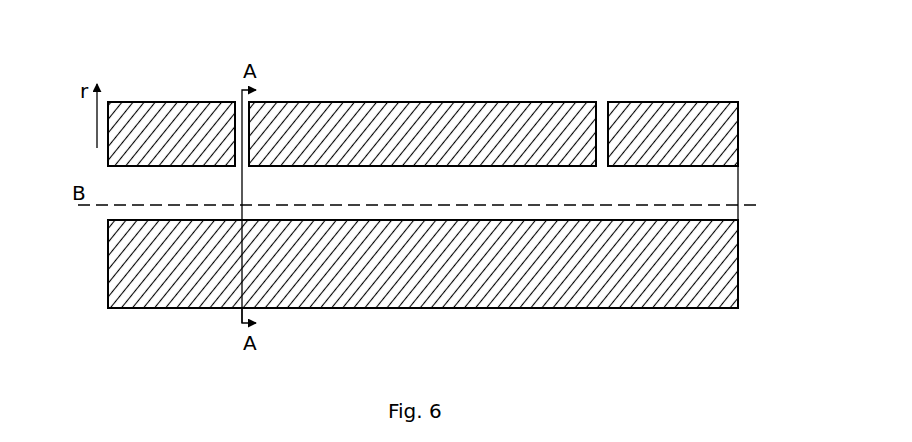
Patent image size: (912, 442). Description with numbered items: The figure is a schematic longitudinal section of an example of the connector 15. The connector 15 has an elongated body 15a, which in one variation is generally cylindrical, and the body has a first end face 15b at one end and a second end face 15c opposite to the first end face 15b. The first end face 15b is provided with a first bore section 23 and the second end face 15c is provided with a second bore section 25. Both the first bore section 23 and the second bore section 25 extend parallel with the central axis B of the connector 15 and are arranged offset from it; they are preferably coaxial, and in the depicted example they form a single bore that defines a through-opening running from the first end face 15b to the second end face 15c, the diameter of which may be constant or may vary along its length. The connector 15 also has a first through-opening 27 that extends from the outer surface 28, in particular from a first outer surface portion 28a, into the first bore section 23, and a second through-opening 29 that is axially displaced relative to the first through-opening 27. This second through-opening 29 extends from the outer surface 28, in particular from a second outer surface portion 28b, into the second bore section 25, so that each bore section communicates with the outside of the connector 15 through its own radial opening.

The connector 15 is at (657, 62).
The elongated body 15a is at (478, 102).
The first end face 15b is at (108, 254).
The second end face 15c is at (738, 247).
The first bore section 23 is at (128, 193).
The second bore section 25 is at (722, 195).
The first through-opening 27 is at (250, 126).
The outer surface 28 is at (310, 302).
The first outer surface portion 28a is at (312, 102).
The second outer surface portion 28b is at (701, 102).
The second through-opening 29 is at (600, 120).